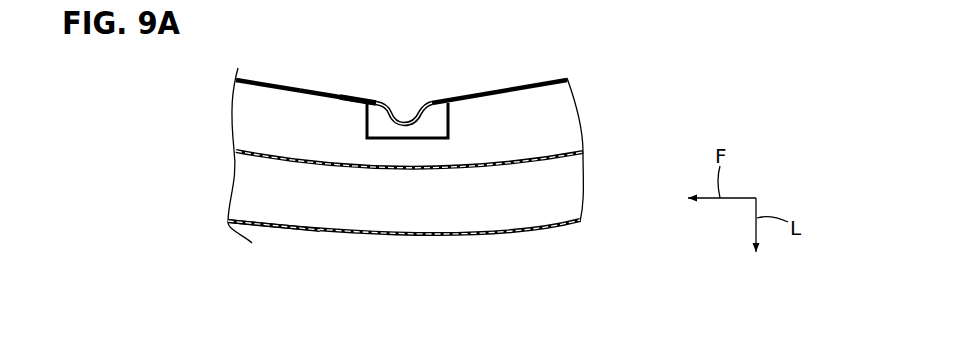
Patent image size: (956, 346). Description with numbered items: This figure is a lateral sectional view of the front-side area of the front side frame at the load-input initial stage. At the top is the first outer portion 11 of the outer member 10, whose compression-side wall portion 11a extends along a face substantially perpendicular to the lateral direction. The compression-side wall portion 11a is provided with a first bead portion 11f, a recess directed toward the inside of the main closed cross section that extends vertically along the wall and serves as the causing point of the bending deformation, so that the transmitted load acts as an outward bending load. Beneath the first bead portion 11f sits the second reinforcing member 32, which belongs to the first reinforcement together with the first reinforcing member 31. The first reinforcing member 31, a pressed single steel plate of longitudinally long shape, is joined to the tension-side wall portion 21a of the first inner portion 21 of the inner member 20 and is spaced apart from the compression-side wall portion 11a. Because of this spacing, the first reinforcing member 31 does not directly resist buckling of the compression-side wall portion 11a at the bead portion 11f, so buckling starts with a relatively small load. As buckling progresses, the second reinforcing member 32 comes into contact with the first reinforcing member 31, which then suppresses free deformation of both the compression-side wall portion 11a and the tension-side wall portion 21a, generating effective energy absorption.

The outer member 10 is at (433, 59).
The first outer portion 11 is at (499, 85).
The compression-side wall portion 11a is at (276, 80).
The first bead portion 11f is at (397, 110).
The second reinforcing member 32 is at (452, 122).
The first reinforcing member 31 is at (256, 149).
The inner member 20 is at (404, 258).
The first inner portion 21 is at (461, 237).
The tension-side wall portion 21a is at (249, 224).